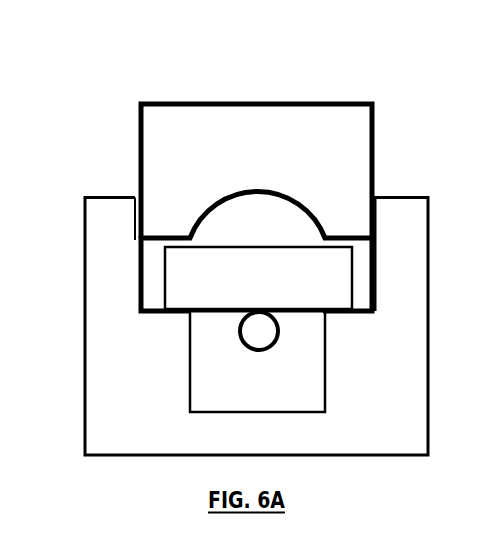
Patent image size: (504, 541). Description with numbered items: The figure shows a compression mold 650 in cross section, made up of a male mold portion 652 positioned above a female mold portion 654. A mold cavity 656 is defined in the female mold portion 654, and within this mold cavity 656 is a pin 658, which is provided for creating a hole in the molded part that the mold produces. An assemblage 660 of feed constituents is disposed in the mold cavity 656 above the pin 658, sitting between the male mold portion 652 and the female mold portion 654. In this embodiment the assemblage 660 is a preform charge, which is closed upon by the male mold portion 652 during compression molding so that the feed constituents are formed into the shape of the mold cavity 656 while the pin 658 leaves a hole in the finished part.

The compression mold 650 is at (415, 78).
The male mold portion 652 is at (270, 158).
The female mold portion 654 is at (190, 442).
The mold cavity 656 is at (293, 392).
The pin 658 is at (238, 331).
The assemblage of feed constituents 660 is at (272, 290).